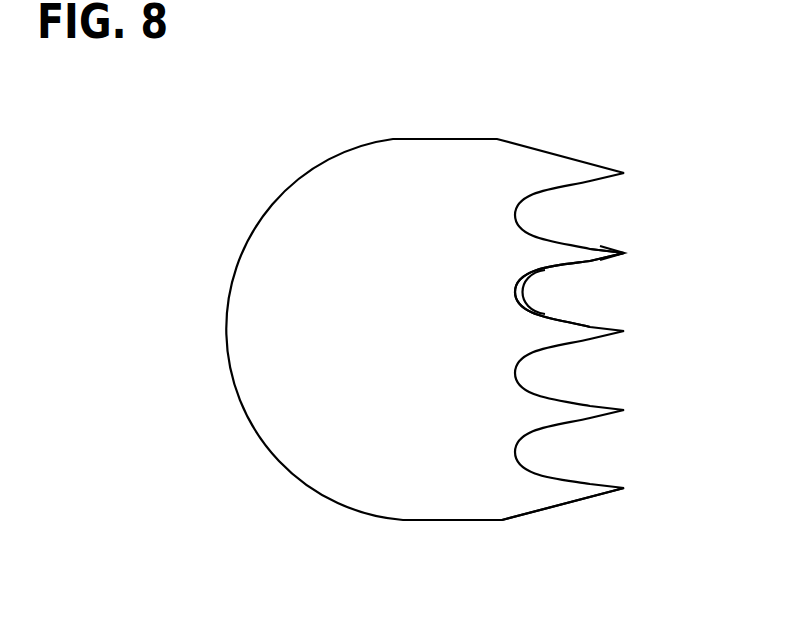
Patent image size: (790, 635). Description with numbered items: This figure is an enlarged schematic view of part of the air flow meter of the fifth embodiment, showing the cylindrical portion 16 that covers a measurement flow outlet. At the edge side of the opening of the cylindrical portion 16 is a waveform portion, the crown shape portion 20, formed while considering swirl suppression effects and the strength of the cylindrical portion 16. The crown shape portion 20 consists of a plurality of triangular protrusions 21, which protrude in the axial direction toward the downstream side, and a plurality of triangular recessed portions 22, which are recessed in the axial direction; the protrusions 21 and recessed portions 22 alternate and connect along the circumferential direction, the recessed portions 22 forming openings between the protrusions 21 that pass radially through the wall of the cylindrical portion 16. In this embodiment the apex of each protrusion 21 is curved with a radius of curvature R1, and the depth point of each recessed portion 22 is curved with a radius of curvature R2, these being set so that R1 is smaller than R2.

The cylindrical portion 16 is at (345, 136).
The crown shape portion 20 is at (555, 508).
The protrusion 21 is at (608, 250).
The recessed portion 22 is at (535, 284).
The radius of curvature of the apex of the protrusion R1 is at (698, 231).
The radius of curvature of the depth point of the recessed portion R2 is at (507, 302).